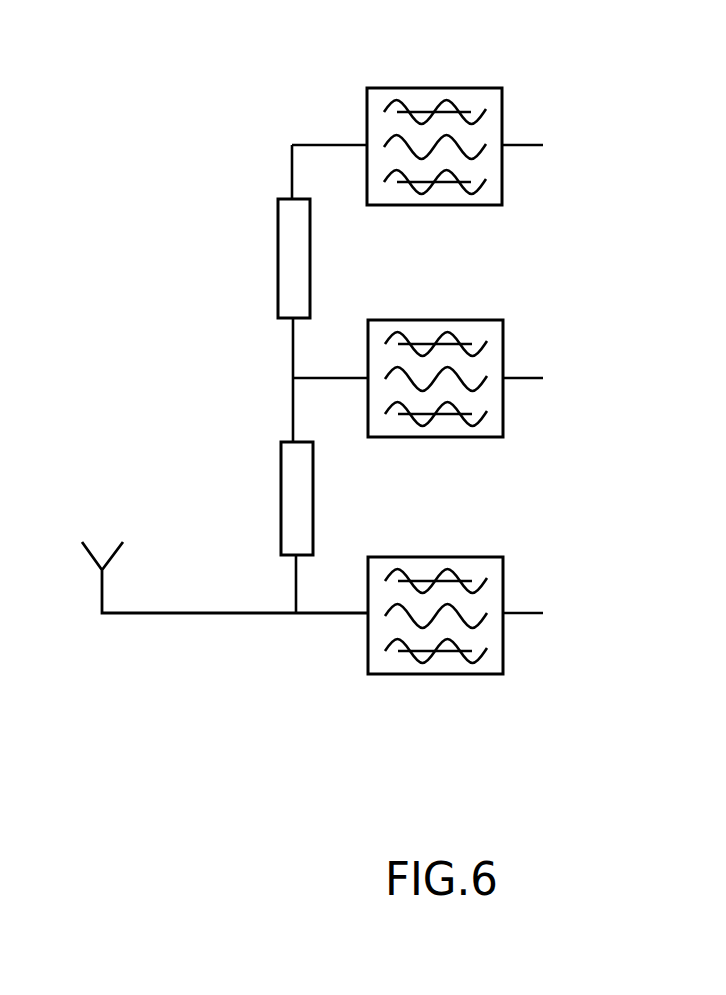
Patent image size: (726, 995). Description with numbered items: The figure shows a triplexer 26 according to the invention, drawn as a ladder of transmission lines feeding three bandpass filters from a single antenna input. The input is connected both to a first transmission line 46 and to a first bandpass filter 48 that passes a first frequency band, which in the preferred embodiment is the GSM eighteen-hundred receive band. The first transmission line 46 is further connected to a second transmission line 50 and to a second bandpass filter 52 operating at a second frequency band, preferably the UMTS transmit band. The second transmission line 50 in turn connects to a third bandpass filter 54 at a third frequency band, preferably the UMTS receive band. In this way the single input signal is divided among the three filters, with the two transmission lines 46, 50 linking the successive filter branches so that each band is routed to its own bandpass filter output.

The triplexer 26 is at (112, 65).
The first transmission line 46 is at (281, 490).
The first bandpass filter 48 is at (440, 672).
The second transmission line 50 is at (278, 260).
The second bandpass filter 52 is at (432, 320).
The third bandpass filter 54 is at (433, 88).